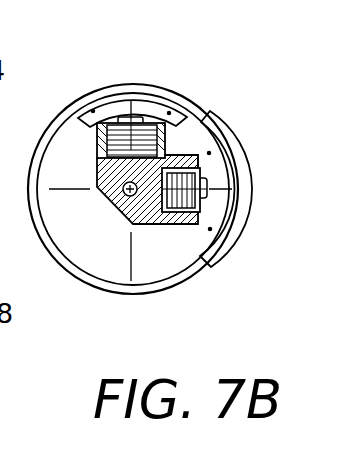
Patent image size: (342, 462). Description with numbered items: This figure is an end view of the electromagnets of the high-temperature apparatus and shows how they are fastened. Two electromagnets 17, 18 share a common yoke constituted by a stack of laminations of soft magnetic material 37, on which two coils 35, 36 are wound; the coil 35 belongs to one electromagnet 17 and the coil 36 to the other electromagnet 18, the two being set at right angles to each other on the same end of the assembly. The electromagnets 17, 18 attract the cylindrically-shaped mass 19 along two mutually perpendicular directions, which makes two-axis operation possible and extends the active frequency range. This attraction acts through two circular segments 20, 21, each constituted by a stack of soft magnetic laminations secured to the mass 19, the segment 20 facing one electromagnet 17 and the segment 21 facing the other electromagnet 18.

The electromagnet 17 is at (97, 158).
The electromagnet 18 is at (196, 155).
The cylindrically-shaped mass 19 is at (158, 101).
The circular segment 20 is at (120, 104).
The circular segment 21 is at (218, 165).
The coil 35 is at (108, 191).
The coil 36 is at (173, 201).
The stack of laminations of soft magnetic material 37 is at (131, 219).